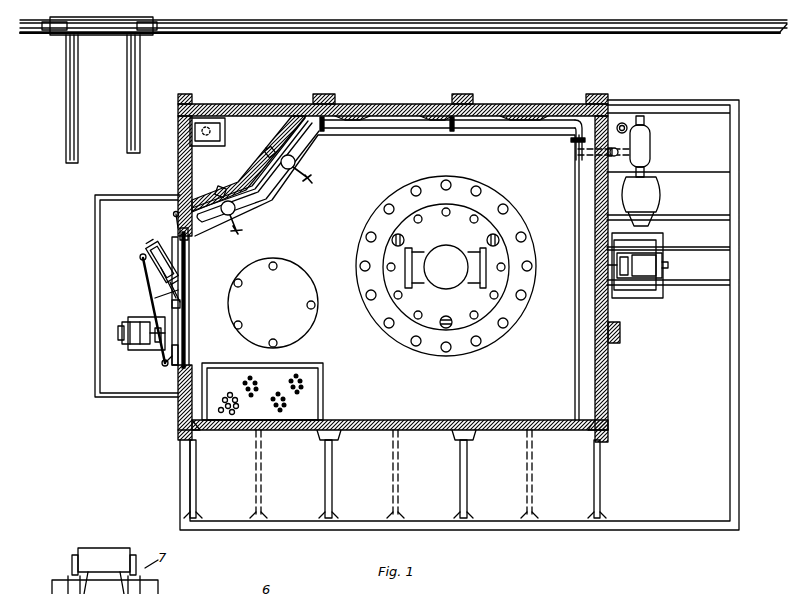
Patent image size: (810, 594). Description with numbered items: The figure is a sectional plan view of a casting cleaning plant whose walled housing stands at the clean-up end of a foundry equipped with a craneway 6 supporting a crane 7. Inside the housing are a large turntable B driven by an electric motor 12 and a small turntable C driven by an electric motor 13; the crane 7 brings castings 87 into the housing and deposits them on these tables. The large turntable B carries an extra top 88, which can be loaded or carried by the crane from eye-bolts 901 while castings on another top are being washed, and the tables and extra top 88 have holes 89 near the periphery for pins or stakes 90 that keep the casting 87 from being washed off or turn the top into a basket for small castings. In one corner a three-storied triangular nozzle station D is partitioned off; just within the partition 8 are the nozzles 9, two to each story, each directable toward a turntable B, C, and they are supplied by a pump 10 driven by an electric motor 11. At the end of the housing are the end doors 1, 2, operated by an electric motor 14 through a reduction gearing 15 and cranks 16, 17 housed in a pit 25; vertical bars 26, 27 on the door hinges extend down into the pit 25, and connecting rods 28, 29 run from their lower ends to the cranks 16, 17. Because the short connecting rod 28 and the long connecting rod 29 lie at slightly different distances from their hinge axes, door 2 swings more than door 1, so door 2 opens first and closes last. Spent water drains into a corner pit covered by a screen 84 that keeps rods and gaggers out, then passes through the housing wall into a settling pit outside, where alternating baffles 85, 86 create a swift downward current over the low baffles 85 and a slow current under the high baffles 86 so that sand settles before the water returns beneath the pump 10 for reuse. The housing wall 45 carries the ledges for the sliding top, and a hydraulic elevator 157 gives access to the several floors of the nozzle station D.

The end door 1 is at (188, 265).
The end door 2 is at (190, 324).
The craneway 6 is at (342, 30).
The crane 7 is at (130, 62).
The partition 8 is at (246, 190).
The nozzle 9 is at (310, 180).
The pump 10 is at (650, 146).
The electric motor 11 is at (660, 200).
The electric motor 12 is at (664, 263).
The electric motor 13 is at (140, 318).
The electric motor 14 is at (154, 248).
The reduction gearing 15 is at (150, 292).
The crank 16 is at (140, 257).
The crank 17 is at (174, 292).
The pit 25 is at (122, 392).
The vertical bar 26 is at (172, 216).
The vertical bar 27 is at (162, 364).
The connecting rod 28 is at (190, 250).
The connecting rod 29 is at (180, 298).
The wall 45 is at (390, 104).
The screen 84 is at (318, 392).
The baffle 85 is at (290, 475).
The baffle 86 is at (332, 490).
The casting 87 is at (447, 246).
The extra top 88 is at (502, 267).
The hole 89 is at (418, 188).
The pin or stake 90 is at (418, 222).
The eye-bolt 901 is at (440, 316).
The hydraulic elevator 157 is at (268, 150).
The large turntable B is at (490, 192).
The small turntable C is at (294, 270).
The nozzle station D is at (388, 169).